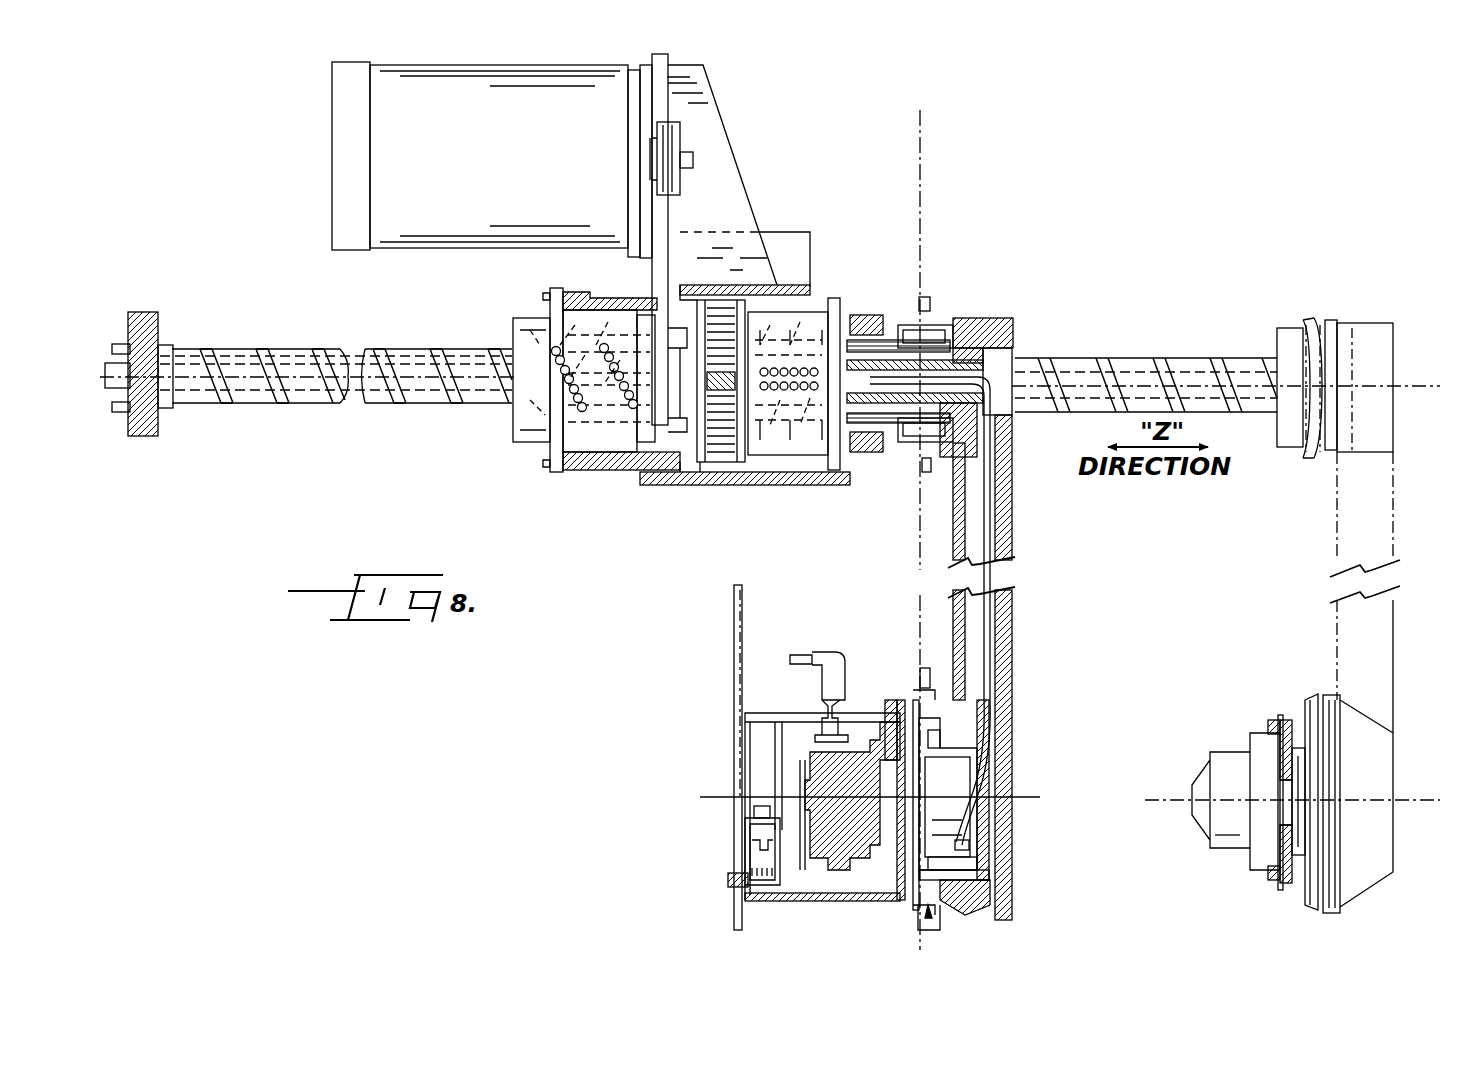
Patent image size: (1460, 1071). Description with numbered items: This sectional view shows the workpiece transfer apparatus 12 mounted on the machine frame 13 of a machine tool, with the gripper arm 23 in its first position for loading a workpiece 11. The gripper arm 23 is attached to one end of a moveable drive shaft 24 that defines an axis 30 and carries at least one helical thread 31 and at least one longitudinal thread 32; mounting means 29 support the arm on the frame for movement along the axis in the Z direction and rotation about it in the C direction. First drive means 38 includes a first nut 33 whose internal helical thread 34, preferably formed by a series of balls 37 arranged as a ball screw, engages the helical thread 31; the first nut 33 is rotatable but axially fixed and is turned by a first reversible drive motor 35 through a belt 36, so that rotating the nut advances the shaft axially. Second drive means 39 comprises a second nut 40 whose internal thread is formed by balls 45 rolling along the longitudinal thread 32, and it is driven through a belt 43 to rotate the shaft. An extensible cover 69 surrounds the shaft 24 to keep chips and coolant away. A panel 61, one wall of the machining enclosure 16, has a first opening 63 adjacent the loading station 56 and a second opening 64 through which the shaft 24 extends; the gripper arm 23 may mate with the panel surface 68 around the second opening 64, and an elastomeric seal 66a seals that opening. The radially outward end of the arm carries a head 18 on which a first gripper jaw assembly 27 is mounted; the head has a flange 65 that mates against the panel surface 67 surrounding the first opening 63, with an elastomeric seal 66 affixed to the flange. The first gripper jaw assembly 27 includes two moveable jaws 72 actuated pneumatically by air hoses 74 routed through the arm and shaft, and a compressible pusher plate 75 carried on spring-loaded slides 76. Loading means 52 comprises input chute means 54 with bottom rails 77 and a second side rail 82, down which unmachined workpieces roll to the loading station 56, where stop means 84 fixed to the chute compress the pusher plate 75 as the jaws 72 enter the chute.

The workpiece 11 is at (885, 768).
The workpiece transfer apparatus 12 is at (1092, 270).
The machine frame 13 is at (757, 232).
The machining enclosure 16 is at (1190, 599).
The head 18 is at (1000, 842).
The gripper arm 23 is at (1012, 560).
The drive shaft 24 is at (320, 405).
The first gripper jaw assembly 27 is at (884, 692).
The mounting means 29 is at (842, 282).
The axis 30 is at (1400, 388).
The helical thread 31 is at (290, 352).
The longitudinal thread 32 is at (215, 395).
The first nut 33 is at (528, 330).
The internal helical thread 34 is at (596, 330).
The first reversible drive motor 35 is at (520, 170).
The belt 36 is at (668, 228).
The balls 37 is at (515, 412).
The first drive means 38 is at (522, 447).
The second drive means 39 is at (798, 457).
The second nut 40 is at (803, 486).
The belt 43 is at (722, 464).
The balls 45 is at (772, 350).
The loading means 52 is at (775, 707).
The input chute means 54 is at (762, 892).
The loading station 56 is at (700, 870).
The panel 61 is at (925, 152).
The first opening 63 is at (916, 702).
The second opening 64 is at (910, 326).
The flange 65 is at (978, 880).
The elastomeric seal 66 is at (982, 718).
The elastomeric seal 66a is at (957, 320).
The panel surface 67 is at (955, 680).
The panel surface 68 is at (927, 298).
The extensible cover 69 is at (920, 455).
The moveable jaws 72 is at (968, 835).
The air hoses 74 is at (120, 390).
The pusher plate 75 is at (932, 905).
The spring-loaded slides 76 is at (975, 862).
The bottom rails 77 is at (832, 850).
The second side rail 82 is at (782, 828).
The stop means 84 is at (878, 918).